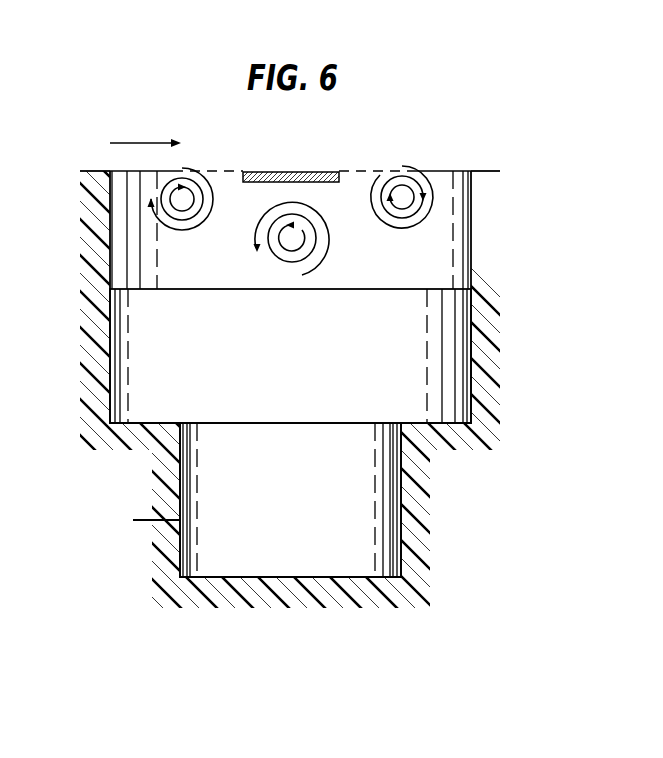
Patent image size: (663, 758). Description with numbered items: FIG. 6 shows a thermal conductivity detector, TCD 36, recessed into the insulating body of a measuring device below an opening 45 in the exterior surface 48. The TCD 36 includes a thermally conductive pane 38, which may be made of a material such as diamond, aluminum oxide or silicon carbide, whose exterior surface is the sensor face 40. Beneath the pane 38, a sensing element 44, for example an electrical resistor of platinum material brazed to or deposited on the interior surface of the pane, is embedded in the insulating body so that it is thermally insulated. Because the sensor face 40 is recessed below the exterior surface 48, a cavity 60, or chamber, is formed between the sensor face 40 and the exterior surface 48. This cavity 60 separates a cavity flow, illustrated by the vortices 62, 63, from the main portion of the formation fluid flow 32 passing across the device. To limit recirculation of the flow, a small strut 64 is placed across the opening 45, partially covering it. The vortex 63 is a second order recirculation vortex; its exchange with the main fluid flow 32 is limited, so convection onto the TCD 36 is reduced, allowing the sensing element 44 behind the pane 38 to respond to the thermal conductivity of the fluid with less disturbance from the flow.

The formation fluid flow 32 is at (135, 143).
The thermal conductivity detector 36 is at (490, 327).
The thermally conductive pane 38 is at (302, 367).
The sensor face 40 is at (134, 288).
The sensing element 44 is at (303, 511).
The opening 45 is at (464, 182).
The exterior surface 48 is at (484, 172).
The cavity 60 is at (442, 257).
The vortices 62 is at (217, 173).
The second order recirculation vortex 63 is at (337, 253).
The strut 64 is at (299, 171).